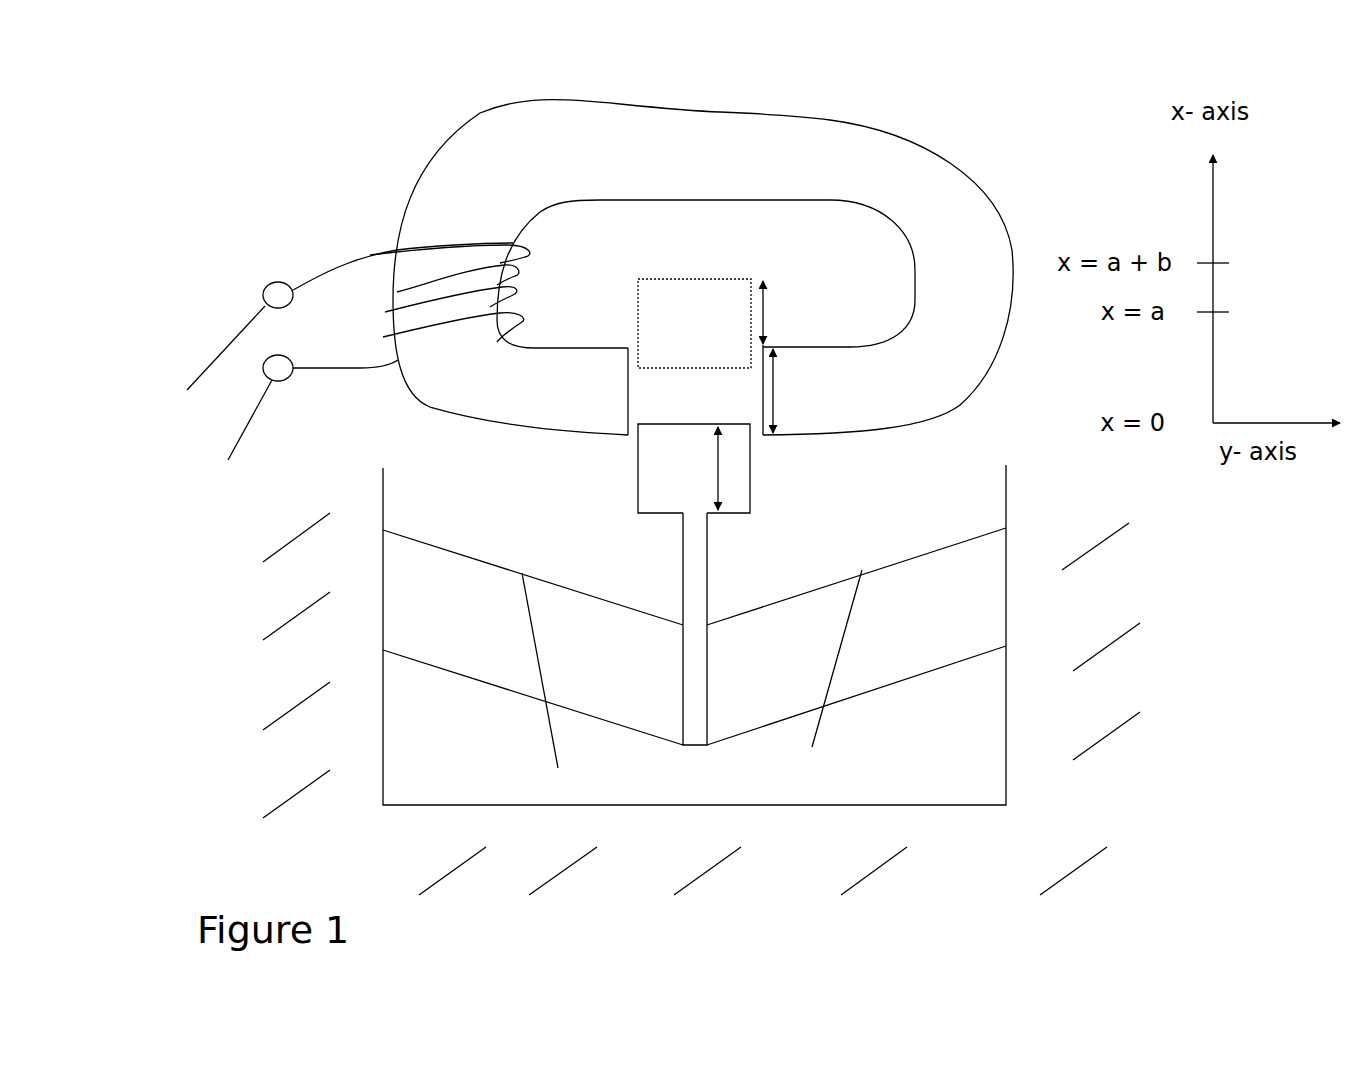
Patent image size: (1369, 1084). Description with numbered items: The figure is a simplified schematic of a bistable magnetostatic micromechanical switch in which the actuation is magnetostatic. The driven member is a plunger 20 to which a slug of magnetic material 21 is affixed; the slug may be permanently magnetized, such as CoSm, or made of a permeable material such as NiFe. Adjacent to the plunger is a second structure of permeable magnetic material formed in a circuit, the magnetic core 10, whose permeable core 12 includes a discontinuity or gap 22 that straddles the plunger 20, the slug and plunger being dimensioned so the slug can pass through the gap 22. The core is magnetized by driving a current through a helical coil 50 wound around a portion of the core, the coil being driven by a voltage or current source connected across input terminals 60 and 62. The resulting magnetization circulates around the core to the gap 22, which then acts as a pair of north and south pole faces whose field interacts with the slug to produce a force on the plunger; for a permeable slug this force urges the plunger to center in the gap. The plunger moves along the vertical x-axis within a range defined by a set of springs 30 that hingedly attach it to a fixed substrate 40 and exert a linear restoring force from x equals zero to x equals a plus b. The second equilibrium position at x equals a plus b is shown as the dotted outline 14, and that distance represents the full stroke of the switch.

The magnetic core 10 is at (818, 412).
The permeable core 12 is at (595, 385).
The dotted outline 14 is at (750, 312).
The plunger 20 is at (683, 590).
The slug of magnetic material 21 is at (672, 468).
The gap 22 is at (717, 406).
The springs 30 is at (495, 682).
The fixed substrate 40 is at (649, 680).
The helical coil 50 is at (348, 265).
The input terminal 60 is at (210, 363).
The input terminal 62 is at (240, 435).